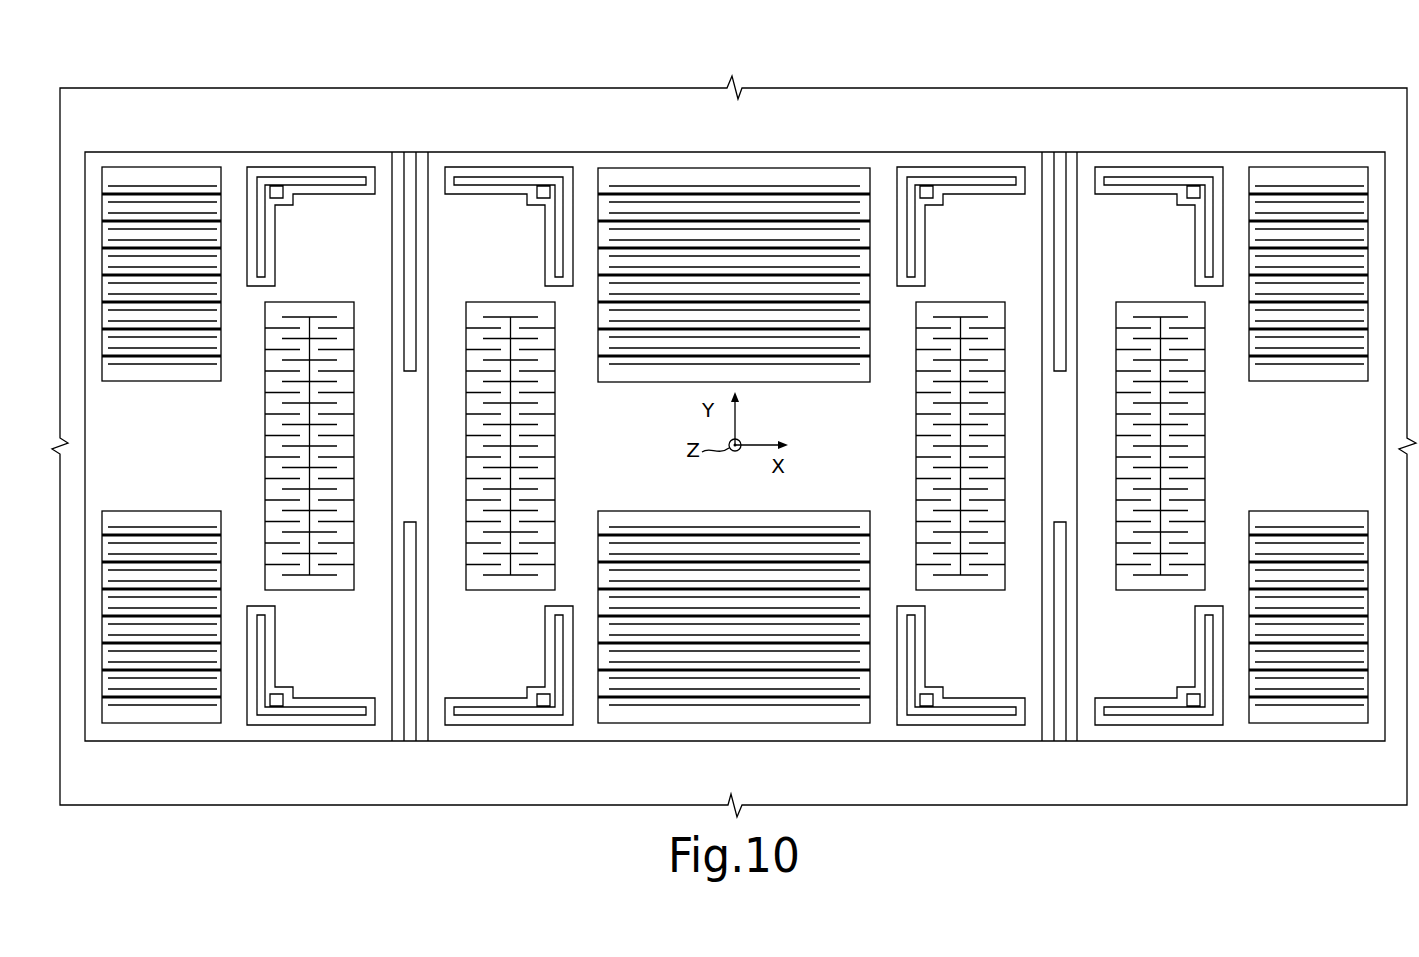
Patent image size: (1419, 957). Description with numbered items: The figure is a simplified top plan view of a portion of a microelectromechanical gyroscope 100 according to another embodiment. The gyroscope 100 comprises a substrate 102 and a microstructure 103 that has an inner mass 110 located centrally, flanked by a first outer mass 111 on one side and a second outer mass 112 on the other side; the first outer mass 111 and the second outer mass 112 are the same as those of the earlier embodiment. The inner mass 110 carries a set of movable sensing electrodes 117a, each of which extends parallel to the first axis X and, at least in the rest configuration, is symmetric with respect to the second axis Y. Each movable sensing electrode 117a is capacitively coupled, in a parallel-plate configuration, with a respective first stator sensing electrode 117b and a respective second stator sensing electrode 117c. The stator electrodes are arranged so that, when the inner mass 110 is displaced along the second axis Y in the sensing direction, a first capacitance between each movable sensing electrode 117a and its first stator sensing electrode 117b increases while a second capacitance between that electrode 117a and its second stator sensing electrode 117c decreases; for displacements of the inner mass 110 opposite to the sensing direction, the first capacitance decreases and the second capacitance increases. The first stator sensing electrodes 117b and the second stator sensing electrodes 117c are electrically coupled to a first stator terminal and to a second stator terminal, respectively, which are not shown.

The microelectromechanical gyroscope 100 is at (1333, 84).
The substrate 102 is at (175, 97).
The microstructure 103 is at (838, 125).
The inner mass 110 is at (582, 157).
The first outer mass 111 is at (260, 730).
The second outer mass 112 is at (1205, 735).
The movable sensing electrode 117a is at (648, 248).
The first stator sensing electrode 117b is at (763, 228).
The second stator sensing electrode 117c is at (828, 362).